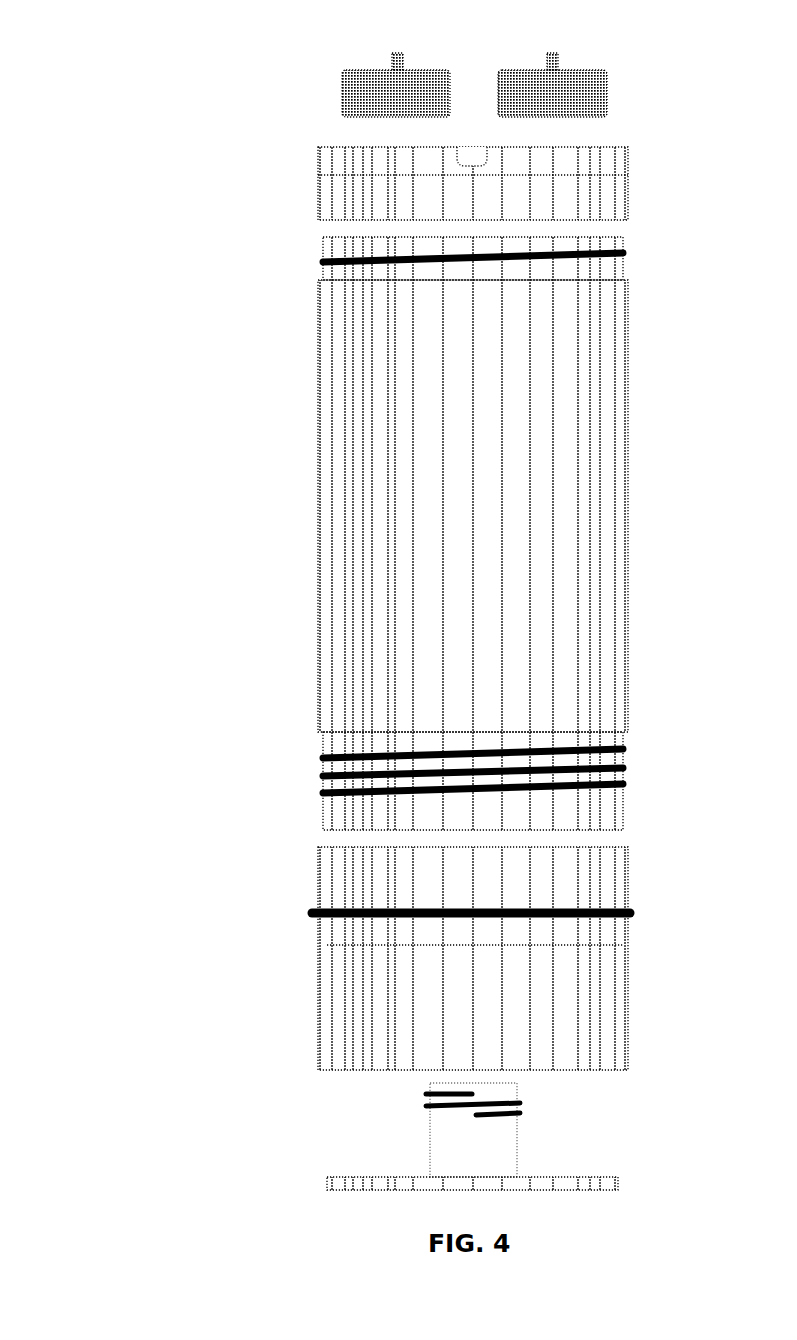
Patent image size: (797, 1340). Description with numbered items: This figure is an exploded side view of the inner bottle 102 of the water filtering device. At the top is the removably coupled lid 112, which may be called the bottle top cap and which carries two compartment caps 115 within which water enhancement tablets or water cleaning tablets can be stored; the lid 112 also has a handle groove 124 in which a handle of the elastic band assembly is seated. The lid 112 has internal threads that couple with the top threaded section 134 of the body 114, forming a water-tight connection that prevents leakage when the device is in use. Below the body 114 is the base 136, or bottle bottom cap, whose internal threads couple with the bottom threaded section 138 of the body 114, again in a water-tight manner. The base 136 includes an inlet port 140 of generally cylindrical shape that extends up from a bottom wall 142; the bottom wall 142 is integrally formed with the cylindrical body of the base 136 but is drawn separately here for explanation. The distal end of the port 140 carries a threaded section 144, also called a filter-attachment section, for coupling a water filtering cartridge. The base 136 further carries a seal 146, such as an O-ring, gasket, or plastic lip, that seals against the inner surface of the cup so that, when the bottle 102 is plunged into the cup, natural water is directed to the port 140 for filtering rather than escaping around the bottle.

The bottle 102 is at (118, 118).
The lid 112 is at (317, 163).
The body 114 is at (318, 468).
The compartment caps 115 is at (360, 78).
The handle groove 124 is at (478, 165).
The top threaded section 134 is at (322, 261).
The base 136 is at (308, 885).
The bottom threaded section 138 is at (322, 776).
The inlet port 140 is at (430, 1165).
The bottom wall 142 is at (328, 1178).
The threaded section 144 is at (522, 1104).
The seal 146 is at (632, 915).